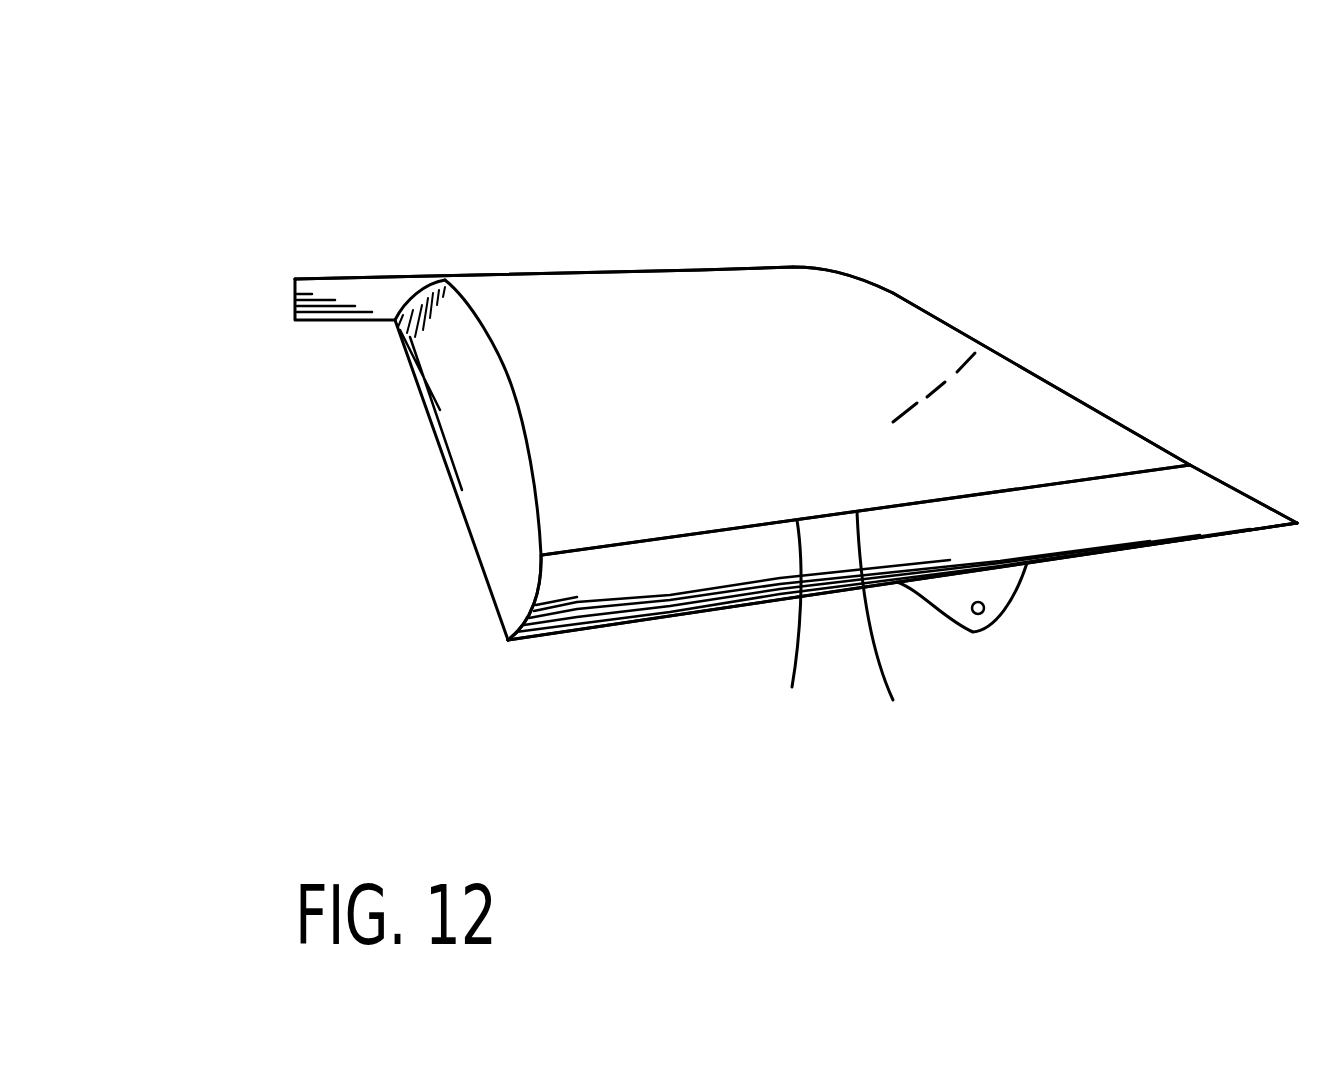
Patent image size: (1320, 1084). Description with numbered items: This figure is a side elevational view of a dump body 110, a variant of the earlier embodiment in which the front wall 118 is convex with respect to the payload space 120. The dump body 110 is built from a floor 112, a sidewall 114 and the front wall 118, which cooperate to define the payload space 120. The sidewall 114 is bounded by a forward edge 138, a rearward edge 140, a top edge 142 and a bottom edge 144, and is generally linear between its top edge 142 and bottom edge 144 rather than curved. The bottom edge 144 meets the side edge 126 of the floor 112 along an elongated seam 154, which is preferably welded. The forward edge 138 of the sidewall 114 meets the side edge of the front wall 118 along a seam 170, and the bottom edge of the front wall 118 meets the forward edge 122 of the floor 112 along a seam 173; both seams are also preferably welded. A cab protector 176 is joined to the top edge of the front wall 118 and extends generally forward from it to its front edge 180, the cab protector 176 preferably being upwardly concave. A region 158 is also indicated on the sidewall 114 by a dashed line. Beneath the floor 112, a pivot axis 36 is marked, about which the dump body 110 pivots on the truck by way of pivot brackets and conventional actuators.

The dump body 110 is at (885, 217).
The top edge 142 is at (703, 270).
The rearward edge 140 is at (913, 300).
The payload space 120 is at (985, 347).
The sidewall 114 is at (752, 378).
The fold line 158 is at (858, 380).
The bottom edge 144 is at (675, 537).
The forward edge 138 is at (535, 468).
The seam 170 is at (517, 392).
The front wall 118 is at (533, 505).
The cab protector 176 is at (368, 278).
The front edge 180 is at (295, 290).
The seam 173 is at (508, 638).
The forward edge 122 is at (508, 640).
The floor 112 is at (670, 585).
The side edge 126 is at (804, 624).
The seam 154 is at (892, 620).
The pivot axis 36 is at (990, 622).